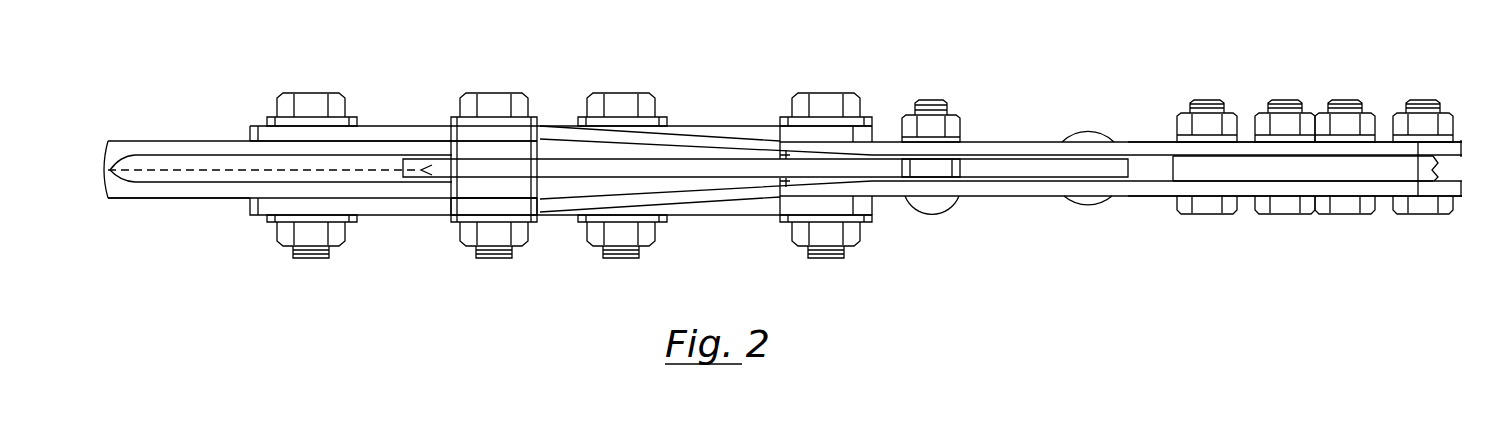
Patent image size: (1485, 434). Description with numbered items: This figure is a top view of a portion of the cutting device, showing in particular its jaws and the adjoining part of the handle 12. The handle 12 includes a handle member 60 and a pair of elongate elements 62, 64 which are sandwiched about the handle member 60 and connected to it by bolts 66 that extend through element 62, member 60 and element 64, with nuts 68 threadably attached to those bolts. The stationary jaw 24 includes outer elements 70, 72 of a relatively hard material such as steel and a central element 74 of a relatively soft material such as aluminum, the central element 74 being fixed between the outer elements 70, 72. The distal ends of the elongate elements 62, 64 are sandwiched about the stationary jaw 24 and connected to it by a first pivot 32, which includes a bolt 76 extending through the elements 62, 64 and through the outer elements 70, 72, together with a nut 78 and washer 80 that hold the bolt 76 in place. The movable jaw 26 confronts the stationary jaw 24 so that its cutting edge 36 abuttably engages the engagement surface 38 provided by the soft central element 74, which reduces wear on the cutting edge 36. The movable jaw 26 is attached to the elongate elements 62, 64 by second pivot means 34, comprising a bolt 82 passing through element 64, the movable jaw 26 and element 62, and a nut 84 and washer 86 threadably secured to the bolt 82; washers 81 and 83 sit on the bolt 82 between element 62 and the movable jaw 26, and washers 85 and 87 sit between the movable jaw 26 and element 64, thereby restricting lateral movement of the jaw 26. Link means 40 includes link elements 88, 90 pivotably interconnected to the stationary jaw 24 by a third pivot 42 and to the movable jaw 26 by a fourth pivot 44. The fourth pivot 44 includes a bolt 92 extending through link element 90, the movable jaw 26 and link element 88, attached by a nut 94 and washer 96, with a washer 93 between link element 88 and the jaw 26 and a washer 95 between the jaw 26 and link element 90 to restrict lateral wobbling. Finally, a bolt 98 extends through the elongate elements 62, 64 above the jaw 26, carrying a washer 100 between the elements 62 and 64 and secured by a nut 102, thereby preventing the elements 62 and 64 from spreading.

The handle 12 is at (1385, 196).
The stationary jaw 24 is at (106, 198).
The movable jaw 26 is at (999, 114).
The first pivot 32 is at (294, 164).
The second pivot means 34 is at (482, 172).
The cutting edge 36 is at (108, 168).
The engagement surface 38 is at (112, 178).
The link means 40 is at (999, 219).
The third pivot 42 is at (634, 94).
The fourth pivot 44 is at (851, 158).
The handle member 60 is at (1378, 160).
The elongate element 62 is at (1157, 197).
The elongate element 64 is at (1137, 142).
The bolt 66 is at (1206, 214).
The nut 68 is at (1192, 110).
The outer element 70 is at (150, 199).
The outer element 72 is at (294, 162).
The central element 74 is at (100, 156).
The bolt 76 is at (322, 93).
The nut 78 is at (278, 240).
The washer 80 is at (265, 216).
The washer 81 is at (536, 200).
The bolt 82 is at (508, 93).
The washer 83 is at (538, 190).
The nut 84 is at (465, 241).
The washer 85 is at (452, 165).
The washer 86 is at (450, 216).
The washer 87 is at (452, 146).
The link element 88 is at (715, 216).
The link element 90 is at (760, 127).
The bolt 92 is at (852, 93).
The washer 93 is at (758, 190).
The nut 94 is at (857, 241).
The washer 95 is at (778, 155).
The washer 96 is at (875, 216).
The bolt 98 is at (940, 210).
The washer 100 is at (975, 150).
The nut 102 is at (956, 158).